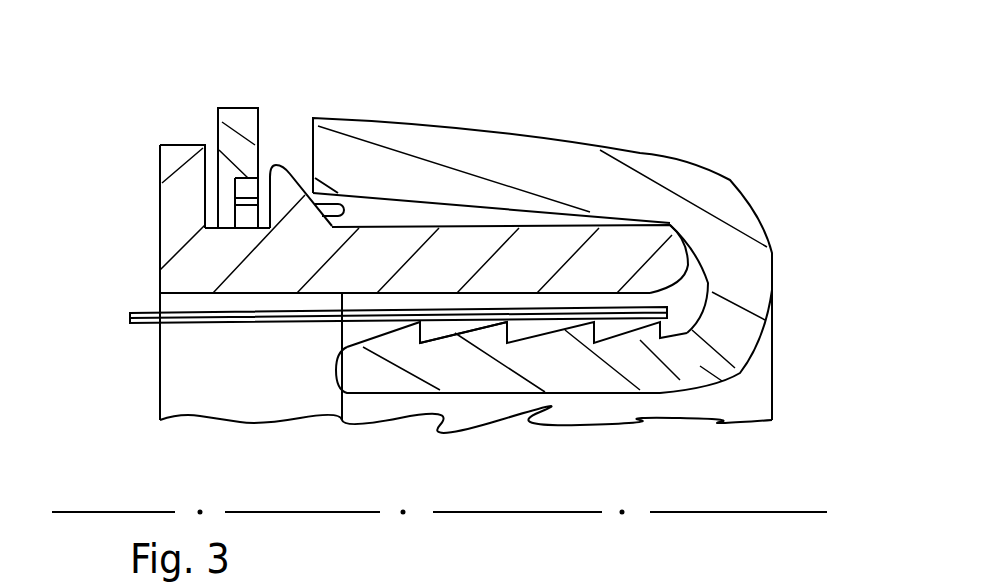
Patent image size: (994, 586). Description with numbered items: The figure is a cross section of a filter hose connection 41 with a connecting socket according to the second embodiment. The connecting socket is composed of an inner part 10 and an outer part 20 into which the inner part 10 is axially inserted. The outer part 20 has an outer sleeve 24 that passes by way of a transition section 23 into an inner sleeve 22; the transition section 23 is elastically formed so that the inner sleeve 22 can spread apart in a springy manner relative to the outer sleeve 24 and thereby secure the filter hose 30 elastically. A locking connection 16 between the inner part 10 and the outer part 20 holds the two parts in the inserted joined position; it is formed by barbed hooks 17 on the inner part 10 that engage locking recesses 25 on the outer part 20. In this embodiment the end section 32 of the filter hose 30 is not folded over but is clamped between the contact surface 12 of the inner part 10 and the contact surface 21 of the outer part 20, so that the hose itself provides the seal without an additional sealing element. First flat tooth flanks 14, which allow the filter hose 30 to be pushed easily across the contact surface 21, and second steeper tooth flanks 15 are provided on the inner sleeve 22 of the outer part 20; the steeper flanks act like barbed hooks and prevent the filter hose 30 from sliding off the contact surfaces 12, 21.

The inner part 10 is at (580, 258).
The contact surface 12 is at (462, 295).
The first flat tooth flanks 14 is at (535, 335).
The second steeper tooth flanks 15 is at (598, 325).
The locking connection 16 is at (256, 176).
The barbed hooks 17 is at (300, 200).
The outer part 20 is at (584, 269).
The contact surface 21 is at (528, 326).
The inner sleeve 22 is at (534, 285).
The transition section 23 is at (747, 257).
The outer sleeve 24 is at (518, 160).
The locking recesses 25 is at (295, 143).
The filter hose 30 is at (272, 323).
The end section 32 is at (654, 322).
The filter hose connection 41 is at (411, 216).